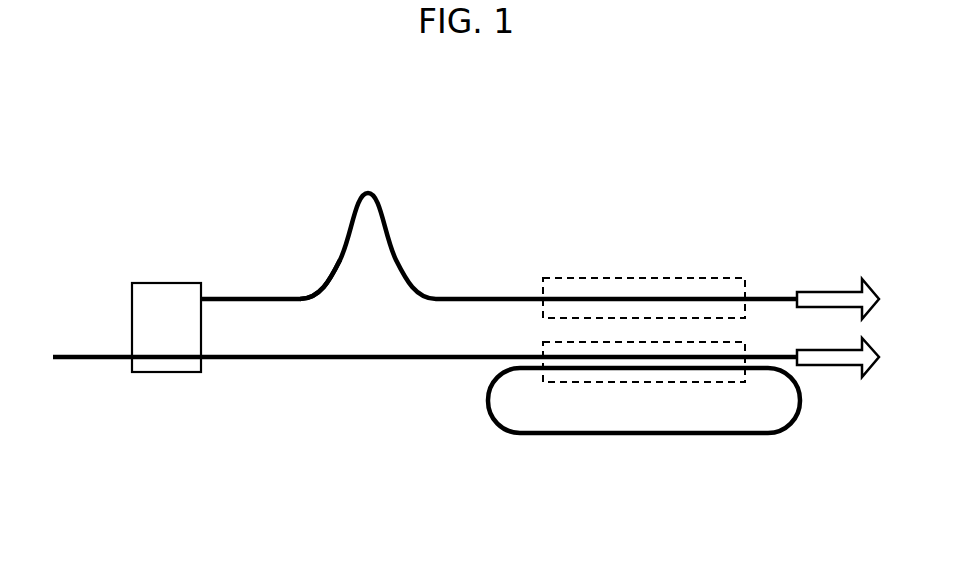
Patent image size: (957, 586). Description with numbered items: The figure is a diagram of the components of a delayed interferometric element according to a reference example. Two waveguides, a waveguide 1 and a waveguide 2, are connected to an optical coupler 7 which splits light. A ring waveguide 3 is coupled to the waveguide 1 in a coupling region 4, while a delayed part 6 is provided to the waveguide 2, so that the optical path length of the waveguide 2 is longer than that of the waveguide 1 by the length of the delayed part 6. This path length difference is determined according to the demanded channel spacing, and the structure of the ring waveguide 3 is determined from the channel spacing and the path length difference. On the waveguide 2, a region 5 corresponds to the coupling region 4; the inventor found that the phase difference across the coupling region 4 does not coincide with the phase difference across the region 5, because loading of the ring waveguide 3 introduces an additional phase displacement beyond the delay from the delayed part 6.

The waveguide 1 is at (270, 360).
The waveguide 2 is at (258, 297).
The ring waveguide 3 is at (641, 435).
The coupling region 4 is at (580, 383).
The region 5 is at (645, 277).
The delayed part 6 is at (387, 233).
The optical coupler 7 is at (165, 297).